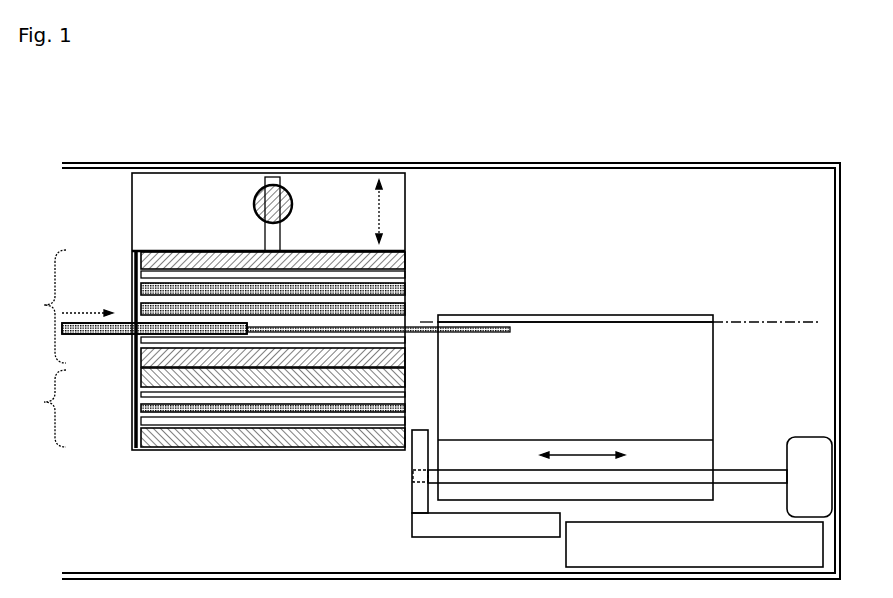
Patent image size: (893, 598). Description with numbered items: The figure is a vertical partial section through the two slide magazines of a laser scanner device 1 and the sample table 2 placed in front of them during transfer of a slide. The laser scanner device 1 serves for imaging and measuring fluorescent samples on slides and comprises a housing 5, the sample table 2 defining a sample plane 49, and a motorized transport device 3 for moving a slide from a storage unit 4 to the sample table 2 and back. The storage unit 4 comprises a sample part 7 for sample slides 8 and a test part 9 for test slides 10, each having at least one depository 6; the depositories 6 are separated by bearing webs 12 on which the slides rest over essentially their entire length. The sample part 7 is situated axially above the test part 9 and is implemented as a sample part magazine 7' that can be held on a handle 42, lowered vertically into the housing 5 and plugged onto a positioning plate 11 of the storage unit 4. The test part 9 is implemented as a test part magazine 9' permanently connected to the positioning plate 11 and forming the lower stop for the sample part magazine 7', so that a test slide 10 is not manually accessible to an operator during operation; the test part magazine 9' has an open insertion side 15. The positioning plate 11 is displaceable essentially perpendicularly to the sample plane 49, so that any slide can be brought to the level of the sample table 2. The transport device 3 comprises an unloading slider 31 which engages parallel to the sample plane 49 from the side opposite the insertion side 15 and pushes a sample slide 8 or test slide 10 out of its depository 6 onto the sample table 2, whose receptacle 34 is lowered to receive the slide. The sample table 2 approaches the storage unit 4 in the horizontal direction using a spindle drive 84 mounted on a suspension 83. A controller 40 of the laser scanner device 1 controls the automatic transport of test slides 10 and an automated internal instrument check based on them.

The laser scanner device 1 is at (690, 114).
The sample table 2 is at (612, 387).
The transport device 3 is at (118, 336).
The unloading slider 31 is at (154, 328).
The storage unit 4 is at (229, 146).
The housing 5 is at (683, 164).
The depository 6 is at (129, 283).
The sample part 7 is at (64, 306).
The sample part magazine 7' is at (244, 232).
The sample slide 8 is at (240, 310).
The test part 9 is at (210, 392).
The test part magazine 9' is at (244, 455).
The test slide 10 is at (134, 437).
The positioning plate 11 is at (355, 225).
The bearing web 12 is at (138, 276).
The insertion side 15 is at (449, 279).
The receptacle 34 is at (539, 293).
The controller 40 is at (681, 550).
The handle 42 is at (286, 190).
The sample plane 49 is at (790, 320).
The suspension 83 is at (428, 521).
The spindle drive 84 is at (741, 480).